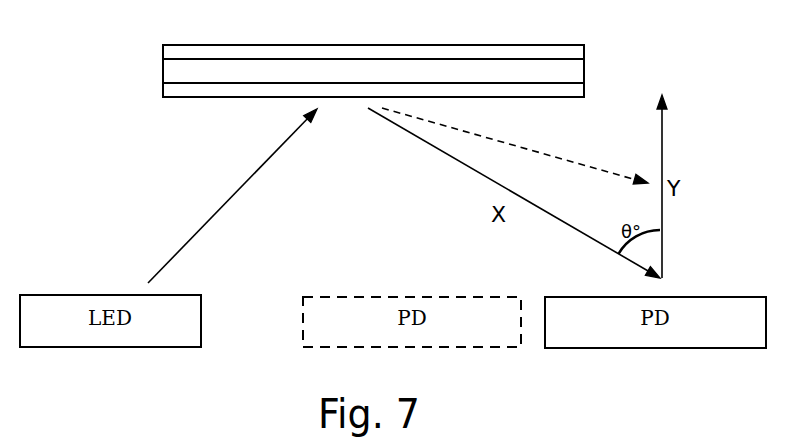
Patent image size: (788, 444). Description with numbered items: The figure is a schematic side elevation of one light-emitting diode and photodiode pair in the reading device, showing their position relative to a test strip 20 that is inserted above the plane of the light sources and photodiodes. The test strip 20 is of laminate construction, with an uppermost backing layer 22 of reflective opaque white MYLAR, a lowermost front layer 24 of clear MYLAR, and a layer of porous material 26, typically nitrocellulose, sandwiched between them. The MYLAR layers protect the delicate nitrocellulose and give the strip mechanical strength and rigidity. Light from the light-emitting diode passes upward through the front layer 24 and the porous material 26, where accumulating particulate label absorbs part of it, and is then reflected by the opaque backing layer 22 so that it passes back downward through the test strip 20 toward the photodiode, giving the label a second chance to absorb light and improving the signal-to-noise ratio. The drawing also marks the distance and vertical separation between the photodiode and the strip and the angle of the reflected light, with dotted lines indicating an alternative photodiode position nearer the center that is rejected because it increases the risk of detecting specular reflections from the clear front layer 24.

The test strip 20 is at (355, 74).
The backing layer 22 is at (165, 52).
The layer of porous material 26 is at (173, 72).
The front layer 24 is at (165, 88).